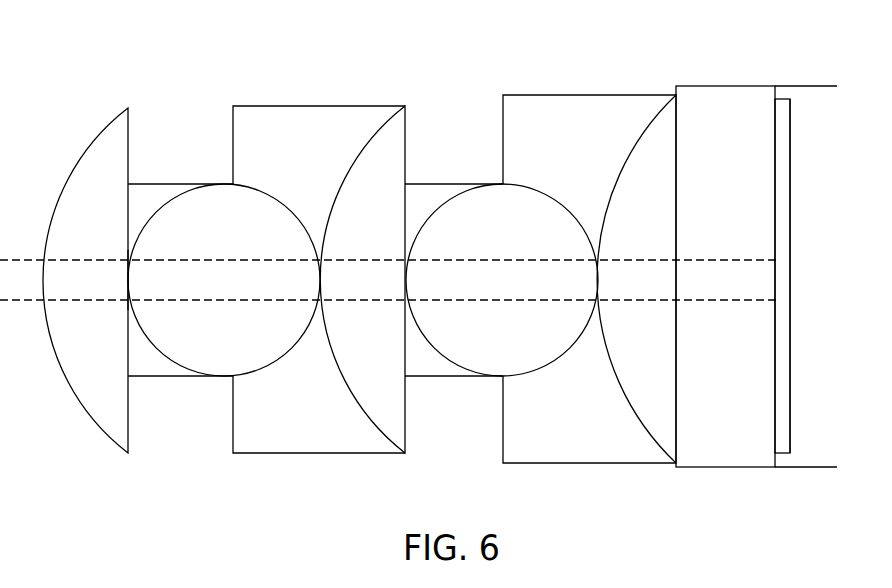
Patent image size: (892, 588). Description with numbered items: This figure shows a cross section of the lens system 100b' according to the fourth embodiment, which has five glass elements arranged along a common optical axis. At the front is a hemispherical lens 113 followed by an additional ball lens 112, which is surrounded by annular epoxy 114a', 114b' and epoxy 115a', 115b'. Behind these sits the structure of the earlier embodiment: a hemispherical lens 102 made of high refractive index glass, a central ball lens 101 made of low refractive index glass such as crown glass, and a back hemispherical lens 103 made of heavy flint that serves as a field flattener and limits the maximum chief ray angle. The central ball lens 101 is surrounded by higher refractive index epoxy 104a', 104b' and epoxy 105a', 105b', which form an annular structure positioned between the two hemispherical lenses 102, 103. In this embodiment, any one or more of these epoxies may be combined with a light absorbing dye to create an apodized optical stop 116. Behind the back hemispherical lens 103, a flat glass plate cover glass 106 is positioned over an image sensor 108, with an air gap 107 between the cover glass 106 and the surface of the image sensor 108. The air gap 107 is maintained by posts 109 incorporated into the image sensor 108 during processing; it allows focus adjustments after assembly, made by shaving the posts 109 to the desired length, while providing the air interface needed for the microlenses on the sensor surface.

The lens system 100b' is at (430, 262).
The hemispherical lens 113 is at (100, 226).
The apodized optical stop 116 is at (123, 282).
The epoxy 114a' is at (180, 152).
The epoxy 114b' is at (180, 409).
The ball lens 112 is at (239, 290).
The epoxy 115a' is at (319, 113).
The epoxy 115b' is at (319, 448).
The hemispherical lens 102 is at (379, 290).
The epoxy 104a' is at (454, 170).
The epoxy 104b' is at (454, 390).
The central ball lens 101 is at (517, 290).
The epoxy 105a' is at (589, 139).
The epoxy 105b' is at (589, 419).
The back hemispherical lens 103 is at (660, 222).
The cover glass 106 is at (743, 290).
The air gap 107 is at (789, 230).
The image sensor 108 is at (794, 320).
The posts 109 is at (787, 60).